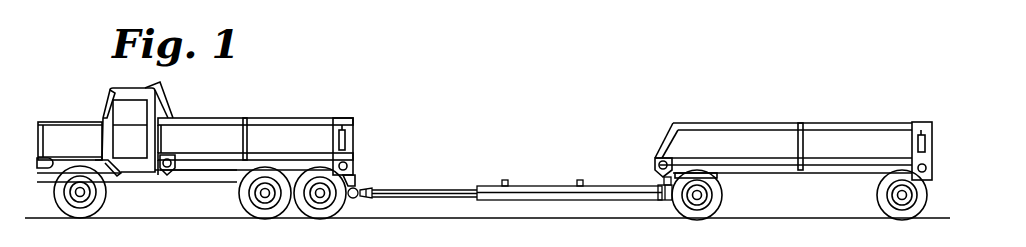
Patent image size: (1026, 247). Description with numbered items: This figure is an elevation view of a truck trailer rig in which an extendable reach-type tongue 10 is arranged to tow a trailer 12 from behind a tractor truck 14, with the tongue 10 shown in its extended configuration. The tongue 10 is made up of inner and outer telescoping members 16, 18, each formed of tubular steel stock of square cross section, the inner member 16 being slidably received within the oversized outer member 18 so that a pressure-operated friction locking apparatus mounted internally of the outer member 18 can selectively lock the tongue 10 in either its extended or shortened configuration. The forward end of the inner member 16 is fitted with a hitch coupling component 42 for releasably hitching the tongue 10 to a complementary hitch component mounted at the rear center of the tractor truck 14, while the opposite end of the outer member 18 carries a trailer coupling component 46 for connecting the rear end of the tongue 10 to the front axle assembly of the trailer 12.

The extendable reach-type tongue 10 is at (510, 183).
The trailer 12 is at (737, 123).
The tractor truck 14 is at (233, 118).
The inner telescoping member 16 is at (412, 198).
The outer telescoping member 18 is at (534, 200).
The hitch coupling component 42 is at (360, 183).
The trailer coupling component 46 is at (662, 178).